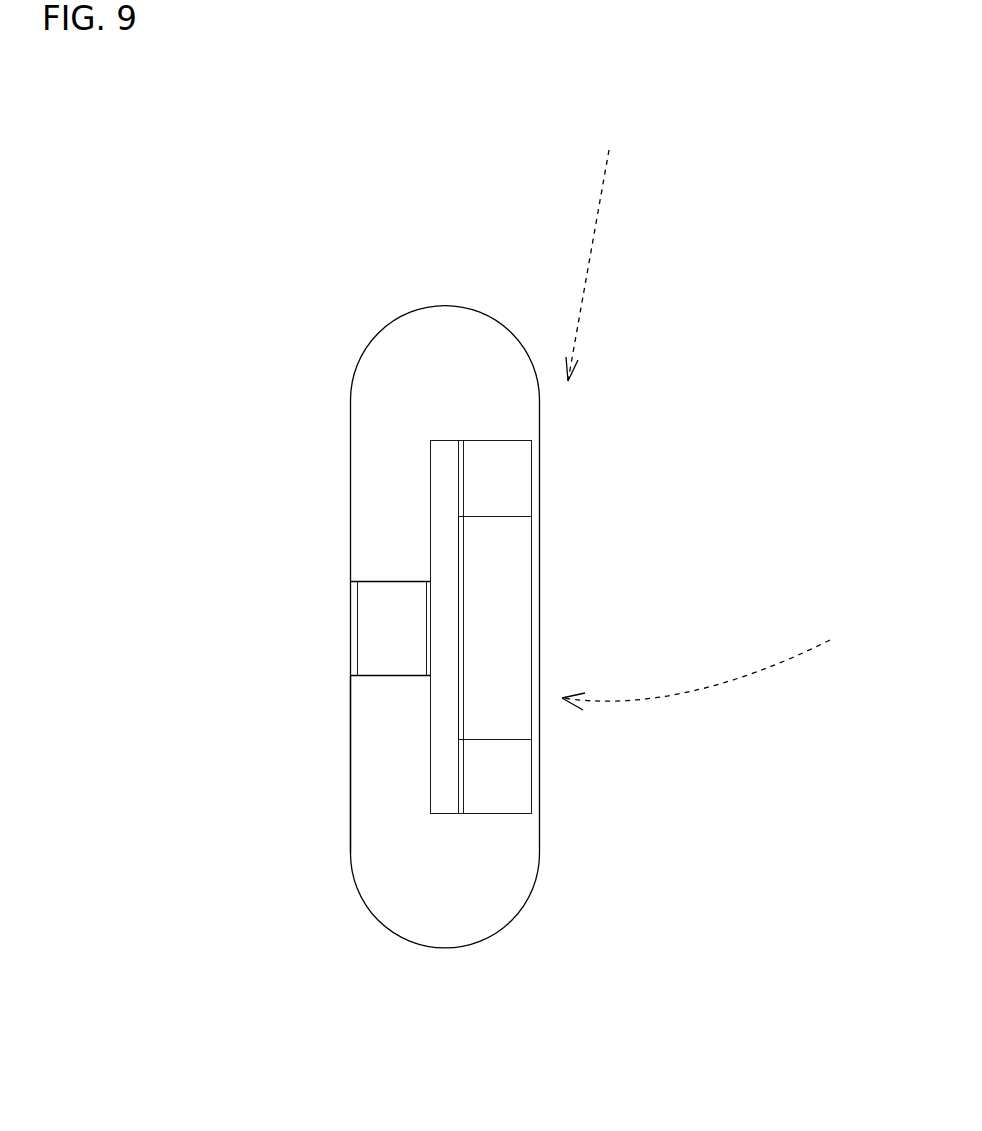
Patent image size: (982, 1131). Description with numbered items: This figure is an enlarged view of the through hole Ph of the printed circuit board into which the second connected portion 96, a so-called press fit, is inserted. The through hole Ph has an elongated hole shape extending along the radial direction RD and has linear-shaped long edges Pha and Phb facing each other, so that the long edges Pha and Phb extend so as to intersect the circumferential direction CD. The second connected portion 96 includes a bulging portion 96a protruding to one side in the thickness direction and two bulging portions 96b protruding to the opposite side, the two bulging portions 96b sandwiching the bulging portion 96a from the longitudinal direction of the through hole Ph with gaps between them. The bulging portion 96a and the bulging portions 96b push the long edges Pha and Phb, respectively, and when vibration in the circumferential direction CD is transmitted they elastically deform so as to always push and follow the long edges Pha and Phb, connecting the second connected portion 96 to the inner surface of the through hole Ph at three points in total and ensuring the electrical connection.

The second connected portion 96 is at (382, 505).
The bulging portion 96a is at (378, 627).
The bulging portions 96b is at (519, 484).
The through hole Ph is at (390, 327).
The long edge Pha is at (352, 708).
The long edge Phb is at (537, 632).
The radial direction RD is at (595, 227).
The circumferential direction CD is at (686, 693).